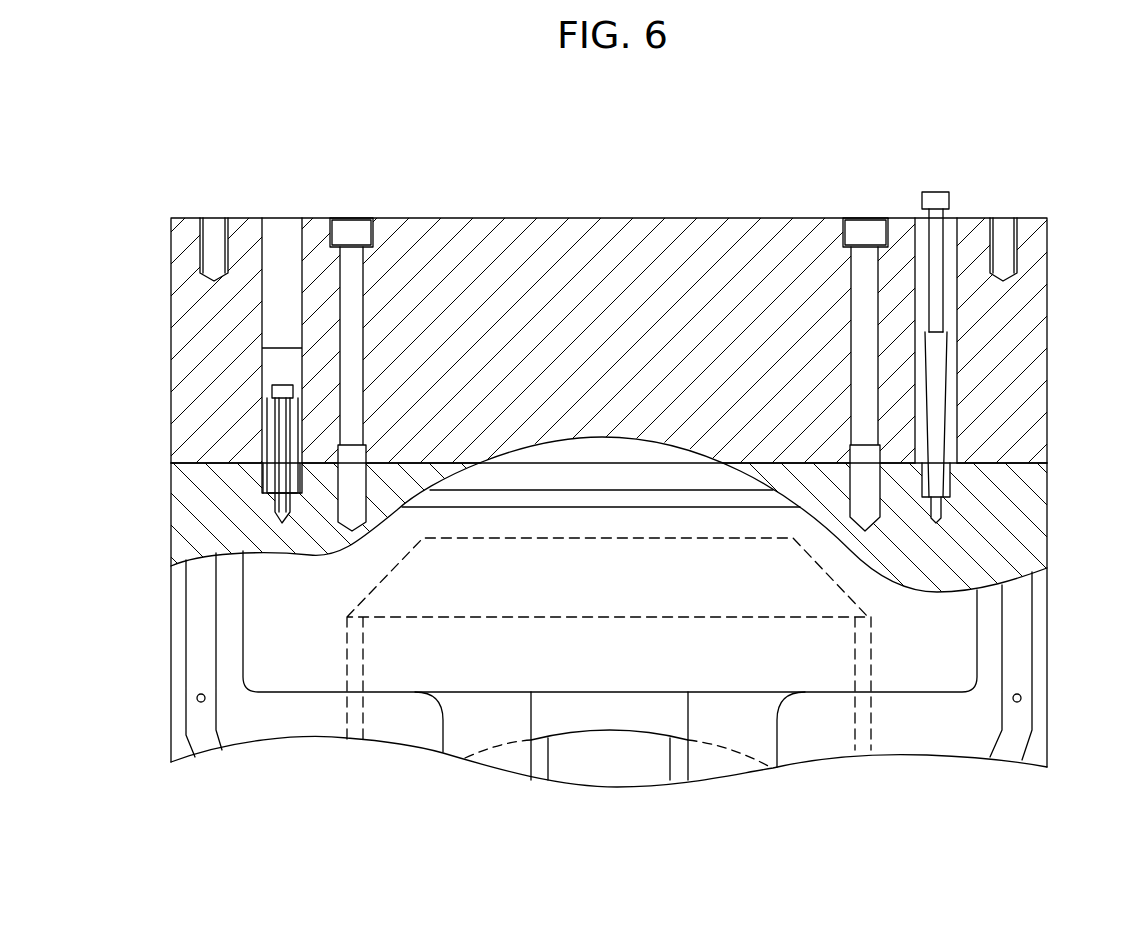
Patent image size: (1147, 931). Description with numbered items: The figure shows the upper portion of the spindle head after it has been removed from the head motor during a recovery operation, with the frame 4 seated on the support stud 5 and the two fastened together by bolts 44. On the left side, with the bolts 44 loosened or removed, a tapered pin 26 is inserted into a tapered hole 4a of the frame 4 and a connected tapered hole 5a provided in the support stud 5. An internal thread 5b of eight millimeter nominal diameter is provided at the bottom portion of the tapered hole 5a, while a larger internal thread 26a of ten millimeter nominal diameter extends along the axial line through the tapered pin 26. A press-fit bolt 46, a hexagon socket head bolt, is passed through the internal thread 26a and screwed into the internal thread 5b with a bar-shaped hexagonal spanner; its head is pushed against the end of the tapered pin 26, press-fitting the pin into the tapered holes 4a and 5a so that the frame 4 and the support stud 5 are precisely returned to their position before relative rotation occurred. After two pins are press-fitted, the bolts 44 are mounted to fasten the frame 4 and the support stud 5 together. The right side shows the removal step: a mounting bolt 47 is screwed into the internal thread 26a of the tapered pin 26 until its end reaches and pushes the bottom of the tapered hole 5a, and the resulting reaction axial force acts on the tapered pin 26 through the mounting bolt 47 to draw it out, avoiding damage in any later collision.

The frame 4 is at (611, 233).
The tapered hole 4a is at (280, 352).
The support stud 5 is at (213, 510).
The tapered hole 5a is at (273, 475).
The internal thread 5b is at (273, 502).
The tapered pin 26 is at (300, 430).
The internal thread 26a is at (280, 405).
The bolt 44 is at (351, 234).
The press-fit bolt 46 is at (284, 352).
The mounting bolt 47 is at (936, 200).